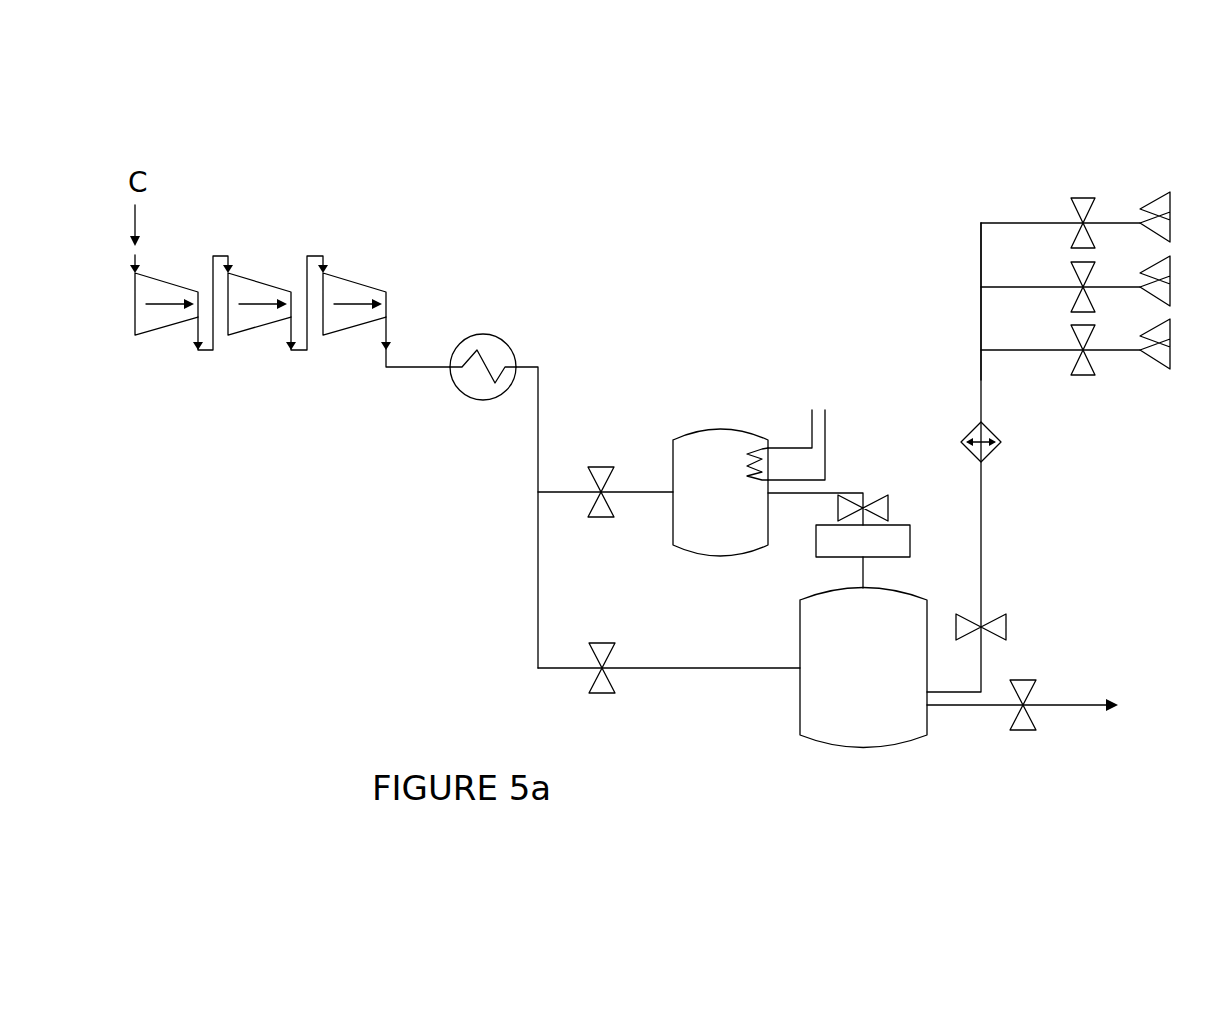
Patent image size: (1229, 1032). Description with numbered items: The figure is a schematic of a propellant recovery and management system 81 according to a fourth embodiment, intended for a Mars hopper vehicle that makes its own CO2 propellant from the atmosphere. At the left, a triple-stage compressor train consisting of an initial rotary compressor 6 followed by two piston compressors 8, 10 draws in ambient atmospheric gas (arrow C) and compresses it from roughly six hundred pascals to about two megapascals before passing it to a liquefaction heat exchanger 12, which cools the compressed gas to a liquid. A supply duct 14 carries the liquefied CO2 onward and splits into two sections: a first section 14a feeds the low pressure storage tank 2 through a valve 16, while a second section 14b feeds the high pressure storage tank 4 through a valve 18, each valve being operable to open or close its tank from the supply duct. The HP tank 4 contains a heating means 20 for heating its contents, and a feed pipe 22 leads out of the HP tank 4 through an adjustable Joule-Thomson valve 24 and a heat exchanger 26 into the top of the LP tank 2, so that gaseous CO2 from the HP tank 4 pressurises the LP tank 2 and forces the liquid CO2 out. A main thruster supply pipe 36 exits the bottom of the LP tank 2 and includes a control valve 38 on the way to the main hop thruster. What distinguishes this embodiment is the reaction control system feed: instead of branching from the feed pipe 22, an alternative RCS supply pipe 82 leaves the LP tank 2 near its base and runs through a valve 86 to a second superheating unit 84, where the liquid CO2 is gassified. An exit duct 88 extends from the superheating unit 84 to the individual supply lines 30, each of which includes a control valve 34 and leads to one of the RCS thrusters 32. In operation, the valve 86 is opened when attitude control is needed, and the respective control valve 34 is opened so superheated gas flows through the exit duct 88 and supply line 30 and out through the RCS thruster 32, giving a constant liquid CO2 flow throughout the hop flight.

The low pressure CO2 storage tank 2 is at (860, 750).
The high pressure CO2 storage tank 4 is at (720, 428).
The initial rotary compressor 6 is at (157, 335).
The piston compressor 8 is at (257, 335).
The piston compressor 10 is at (347, 335).
The liquefaction heat exchanger 12 is at (487, 335).
The supply duct 14 is at (532, 436).
The first supply duct section 14a is at (555, 672).
The second supply duct section 14b is at (556, 497).
The valve 16 is at (600, 642).
The valve 18 is at (603, 467).
The heating means 20 is at (825, 432).
The feed pipe 22 is at (787, 497).
The Joule-Thomson valve 24 is at (890, 507).
The heat exchanger 26 is at (910, 540).
The supply lines 30 is at (1018, 222).
The RCS thrusters 32 is at (1172, 226).
The control valve 34 is at (1085, 197).
The main thruster supply pipe 36 is at (963, 708).
The control valve 38 is at (1020, 735).
The propellant recovery and management system 81 is at (740, 238).
The RCS supply pipe 82 is at (950, 690).
The second superheating unit 84 is at (1003, 450).
The valve 86 is at (1010, 627).
The exit duct 88 is at (981, 382).